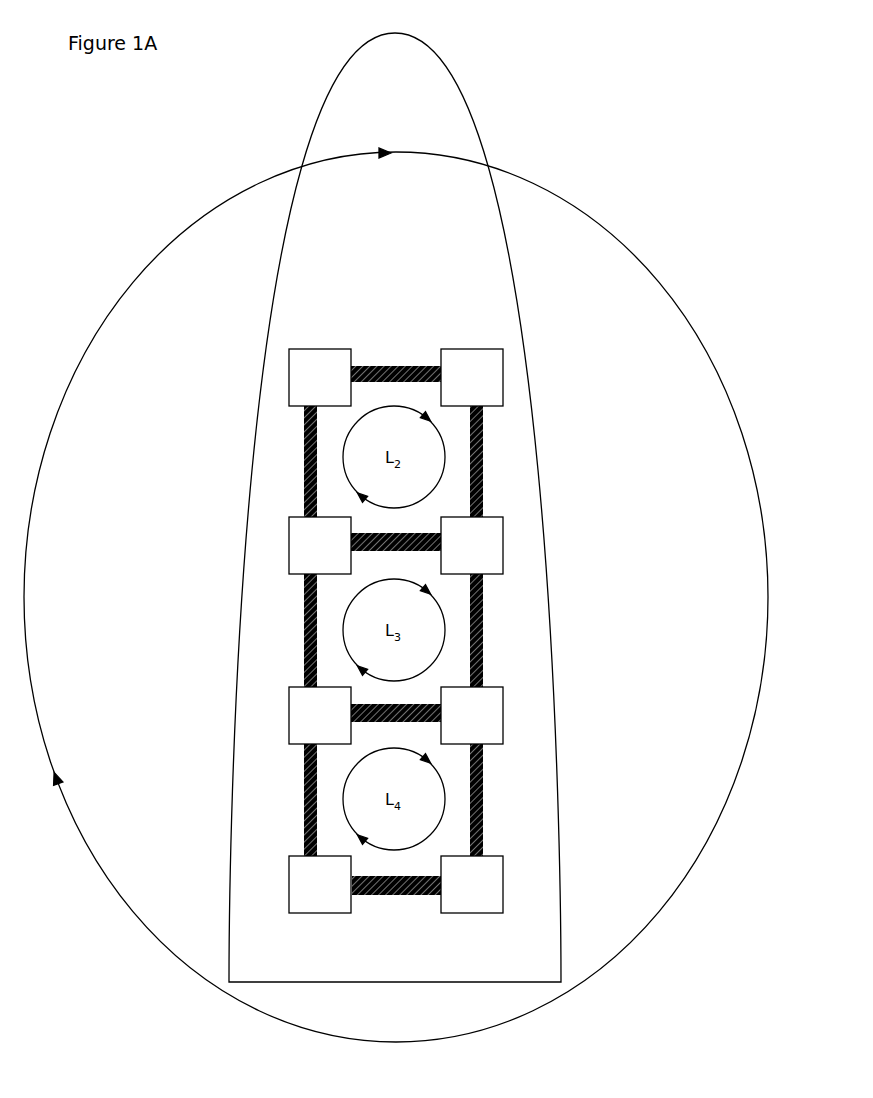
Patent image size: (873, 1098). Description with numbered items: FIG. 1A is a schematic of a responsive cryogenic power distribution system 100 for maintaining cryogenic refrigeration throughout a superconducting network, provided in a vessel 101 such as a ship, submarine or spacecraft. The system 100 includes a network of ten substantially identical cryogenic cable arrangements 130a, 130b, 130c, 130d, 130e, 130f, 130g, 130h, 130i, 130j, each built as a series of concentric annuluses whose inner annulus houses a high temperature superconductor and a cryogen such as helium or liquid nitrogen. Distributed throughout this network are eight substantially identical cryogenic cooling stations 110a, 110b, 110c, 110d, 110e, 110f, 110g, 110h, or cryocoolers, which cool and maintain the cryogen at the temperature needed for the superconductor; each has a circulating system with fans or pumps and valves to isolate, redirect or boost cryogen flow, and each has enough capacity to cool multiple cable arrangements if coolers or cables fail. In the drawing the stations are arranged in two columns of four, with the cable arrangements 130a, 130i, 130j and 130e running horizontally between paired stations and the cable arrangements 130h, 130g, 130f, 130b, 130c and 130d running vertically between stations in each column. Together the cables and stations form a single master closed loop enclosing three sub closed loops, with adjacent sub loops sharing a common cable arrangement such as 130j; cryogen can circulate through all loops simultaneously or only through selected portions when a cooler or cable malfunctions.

The responsive cryogenic power distribution system 100 is at (573, 131).
The vessel 101 is at (406, 121).
The cryogenic cooling station 110a is at (291, 352).
The cryogenic cooling station 110b is at (444, 352).
The cryogenic cooling station 110c is at (503, 557).
The cryogenic cooling station 110d is at (503, 730).
The cryogenic cooling station 110e is at (503, 895).
The cryogenic cooling station 110f is at (289, 895).
The cryogenic cooling station 110g is at (289, 730).
The cryogenic cooling station 110h is at (289, 557).
The cryogenic cable arrangement 130a is at (388, 382).
The cryogenic cable arrangement 130b is at (483, 473).
The cryogenic cable arrangement 130c is at (483, 615).
The cryogenic cable arrangement 130d is at (483, 800).
The cryogenic cable arrangement 130e is at (393, 895).
The cryogenic cable arrangement 130f is at (304, 800).
The cryogenic cable arrangement 130g is at (304, 615).
The cryogenic cable arrangement 130h is at (304, 473).
The cryogenic cable arrangement 130i is at (386, 551).
The cryogenic cable arrangement 130j is at (386, 722).